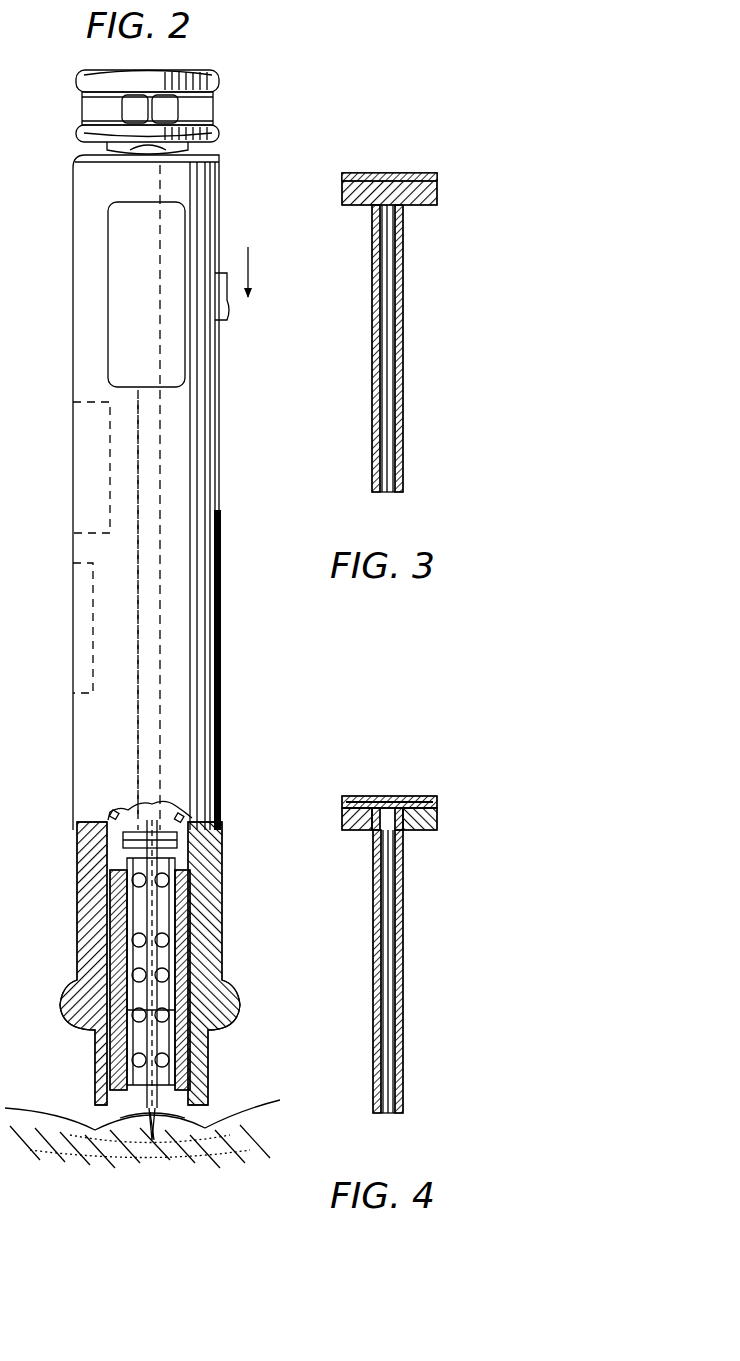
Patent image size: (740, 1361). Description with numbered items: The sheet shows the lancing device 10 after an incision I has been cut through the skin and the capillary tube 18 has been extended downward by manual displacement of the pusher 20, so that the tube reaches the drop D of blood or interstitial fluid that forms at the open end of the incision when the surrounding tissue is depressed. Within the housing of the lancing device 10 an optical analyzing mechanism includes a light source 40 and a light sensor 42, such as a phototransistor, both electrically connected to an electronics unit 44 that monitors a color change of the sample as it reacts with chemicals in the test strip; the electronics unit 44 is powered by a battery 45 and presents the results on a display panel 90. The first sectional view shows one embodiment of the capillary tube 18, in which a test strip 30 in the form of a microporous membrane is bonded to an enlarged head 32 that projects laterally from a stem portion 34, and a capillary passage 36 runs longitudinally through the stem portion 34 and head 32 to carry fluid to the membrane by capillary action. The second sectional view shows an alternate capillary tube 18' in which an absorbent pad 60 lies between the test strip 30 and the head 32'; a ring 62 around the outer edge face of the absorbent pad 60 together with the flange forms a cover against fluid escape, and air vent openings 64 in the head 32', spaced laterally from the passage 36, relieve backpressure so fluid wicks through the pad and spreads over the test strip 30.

In FIG. 2, the lancing device 10 is at (226, 418).
In FIG. 2, the display panel 90 is at (188, 213).
In FIG. 2, the battery 45 is at (86, 466).
In FIG. 2, the electronics unit 44 is at (84, 622).
In FIG. 2, the pusher 20 is at (136, 735).
In FIG. 2, the light source 40 is at (110, 815).
In FIG. 2, the light sensor 42 is at (183, 818).
In FIG. 2, the capillary tube 18 is at (195, 980).
In FIG. 3, the capillary tube 18 is at (418, 305).
In FIG. 2, the drop of body fluid D is at (206, 1112).
In FIG. 2, the incision I is at (138, 1140).
In FIG. 3, the test strip 30 is at (396, 174).
In FIG. 4, the test strip 30 is at (388, 796).
In FIG. 3, the head 32 is at (414, 189).
In FIG. 3, the stem portion 34 is at (404, 364).
In FIG. 3, the capillary passage 36 is at (388, 434).
In FIG. 4, the capillary passage 36 is at (390, 1060).
In FIG. 4, the capillary tube 18' is at (393, 923).
In FIG. 4, the head 32' is at (423, 817).
In FIG. 4, the absorbent pad 60 is at (405, 796).
In FIG. 4, the ring 62 is at (342, 808).
In FIG. 4, the air vent openings 64 is at (362, 832).